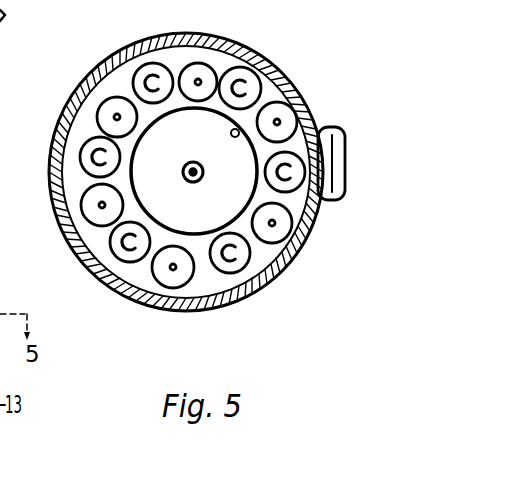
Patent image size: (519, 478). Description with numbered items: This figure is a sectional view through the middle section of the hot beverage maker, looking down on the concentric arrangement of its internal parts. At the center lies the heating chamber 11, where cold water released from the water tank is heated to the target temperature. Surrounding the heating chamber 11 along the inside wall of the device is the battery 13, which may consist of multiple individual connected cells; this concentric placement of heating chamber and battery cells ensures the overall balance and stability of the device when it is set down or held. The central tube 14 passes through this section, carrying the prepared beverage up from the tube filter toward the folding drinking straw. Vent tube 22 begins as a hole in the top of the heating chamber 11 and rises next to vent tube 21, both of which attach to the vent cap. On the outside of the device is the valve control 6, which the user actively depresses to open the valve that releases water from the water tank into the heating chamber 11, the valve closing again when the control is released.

The valve control 6 is at (345, 153).
The heating chamber 11 is at (246, 189).
The battery 13 is at (133, 80).
The central tube 14 is at (193, 172).
The vent tube 21 is at (193, 172).
The vent tube 22 is at (238, 130).